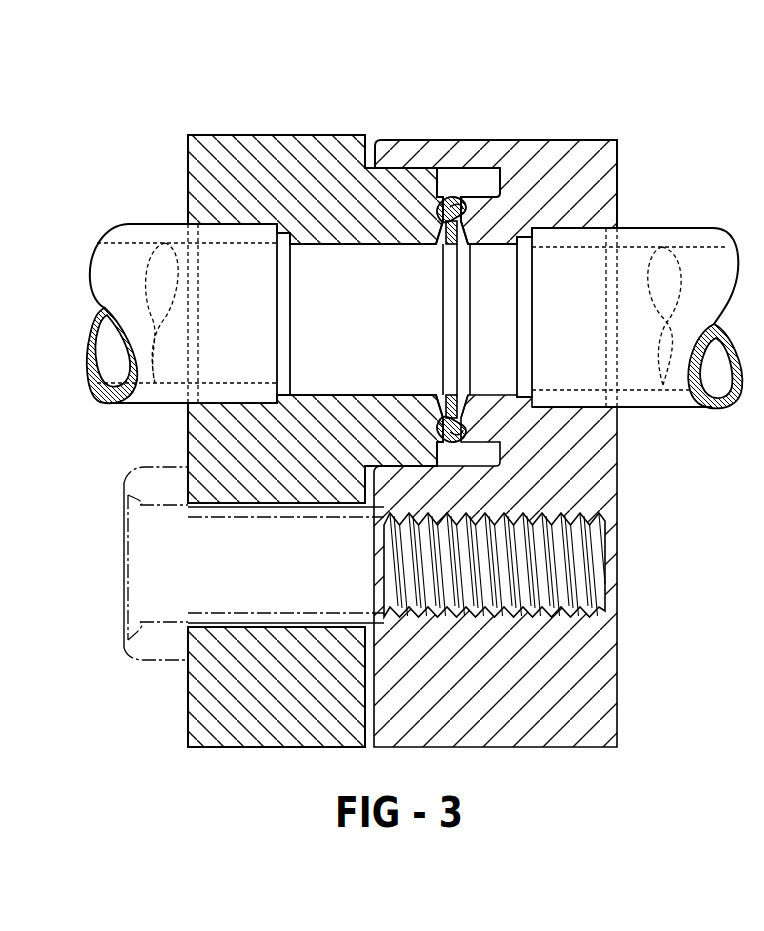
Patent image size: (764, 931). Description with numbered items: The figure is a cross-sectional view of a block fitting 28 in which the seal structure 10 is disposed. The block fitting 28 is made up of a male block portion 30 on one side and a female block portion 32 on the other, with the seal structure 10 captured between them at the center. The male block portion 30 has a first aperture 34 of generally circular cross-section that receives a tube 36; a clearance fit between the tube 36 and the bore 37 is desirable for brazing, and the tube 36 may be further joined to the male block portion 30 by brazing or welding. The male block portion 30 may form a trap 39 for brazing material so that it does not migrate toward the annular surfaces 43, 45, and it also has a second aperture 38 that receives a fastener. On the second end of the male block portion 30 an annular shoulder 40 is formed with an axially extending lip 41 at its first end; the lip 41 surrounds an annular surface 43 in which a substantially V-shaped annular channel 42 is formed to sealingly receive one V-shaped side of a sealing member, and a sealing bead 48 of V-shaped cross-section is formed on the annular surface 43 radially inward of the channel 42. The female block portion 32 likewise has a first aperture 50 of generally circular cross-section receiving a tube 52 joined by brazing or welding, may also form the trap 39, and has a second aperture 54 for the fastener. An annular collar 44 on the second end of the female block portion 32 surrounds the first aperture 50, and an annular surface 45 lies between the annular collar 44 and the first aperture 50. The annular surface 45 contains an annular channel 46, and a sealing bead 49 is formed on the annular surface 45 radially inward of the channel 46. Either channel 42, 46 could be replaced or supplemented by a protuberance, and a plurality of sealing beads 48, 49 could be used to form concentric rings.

The seal structure 10 is at (452, 322).
The block fitting 28 is at (178, 97).
The male block portion 30 is at (188, 122).
The female block portion 32 is at (617, 142).
The first aperture 34 is at (248, 228).
The tube 36 is at (101, 226).
The bore 37 is at (223, 233).
The second aperture 38 is at (220, 582).
The trap 39 is at (281, 235).
The annular shoulder 40 is at (406, 200).
The lip 41 is at (497, 200).
The annular channel 42 is at (445, 200).
The annular surface 43 is at (438, 406).
The annular collar 44 is at (462, 152).
The annular surface 45 is at (477, 406).
The annular channel 46 is at (476, 186).
The sealing bead 48 is at (438, 244).
The sealing bead 49 is at (470, 245).
The first aperture 50 is at (547, 233).
The tube 52 is at (726, 233).
The second aperture 54 is at (580, 573).